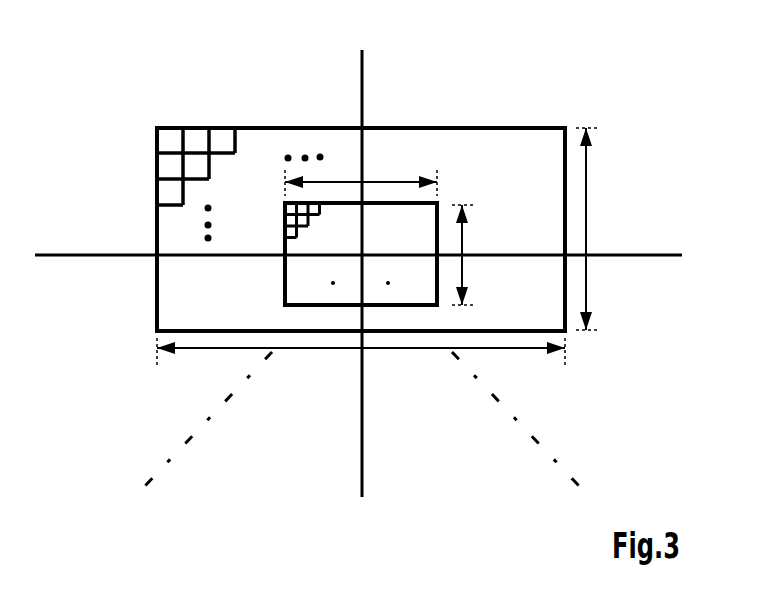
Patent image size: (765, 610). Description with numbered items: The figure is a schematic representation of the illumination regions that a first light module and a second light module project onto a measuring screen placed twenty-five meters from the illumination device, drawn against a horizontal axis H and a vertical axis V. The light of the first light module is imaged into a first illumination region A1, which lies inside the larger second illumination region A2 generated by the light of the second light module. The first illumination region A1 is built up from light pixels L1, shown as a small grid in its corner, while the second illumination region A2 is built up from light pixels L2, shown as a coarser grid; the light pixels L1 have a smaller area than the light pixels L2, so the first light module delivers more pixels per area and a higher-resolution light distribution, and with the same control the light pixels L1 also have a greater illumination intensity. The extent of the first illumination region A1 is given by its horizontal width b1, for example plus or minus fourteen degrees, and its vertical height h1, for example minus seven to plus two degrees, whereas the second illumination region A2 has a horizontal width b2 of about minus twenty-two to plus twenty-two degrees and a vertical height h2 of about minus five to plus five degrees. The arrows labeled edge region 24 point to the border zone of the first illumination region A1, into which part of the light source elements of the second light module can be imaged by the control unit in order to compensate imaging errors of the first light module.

The edge region 24 is at (462, 168).
The first illumination region A1 is at (397, 308).
The second illumination region A2 is at (532, 128).
The light pixels L1 is at (284, 222).
The light pixels L2 is at (194, 135).
The horizontal width b1 is at (393, 182).
The horizontal width b2 is at (320, 343).
The vertical height h1 is at (462, 244).
The vertical height h2 is at (592, 188).
The vertical axis V is at (352, 262).
The horizontal axis H is at (358, 273).